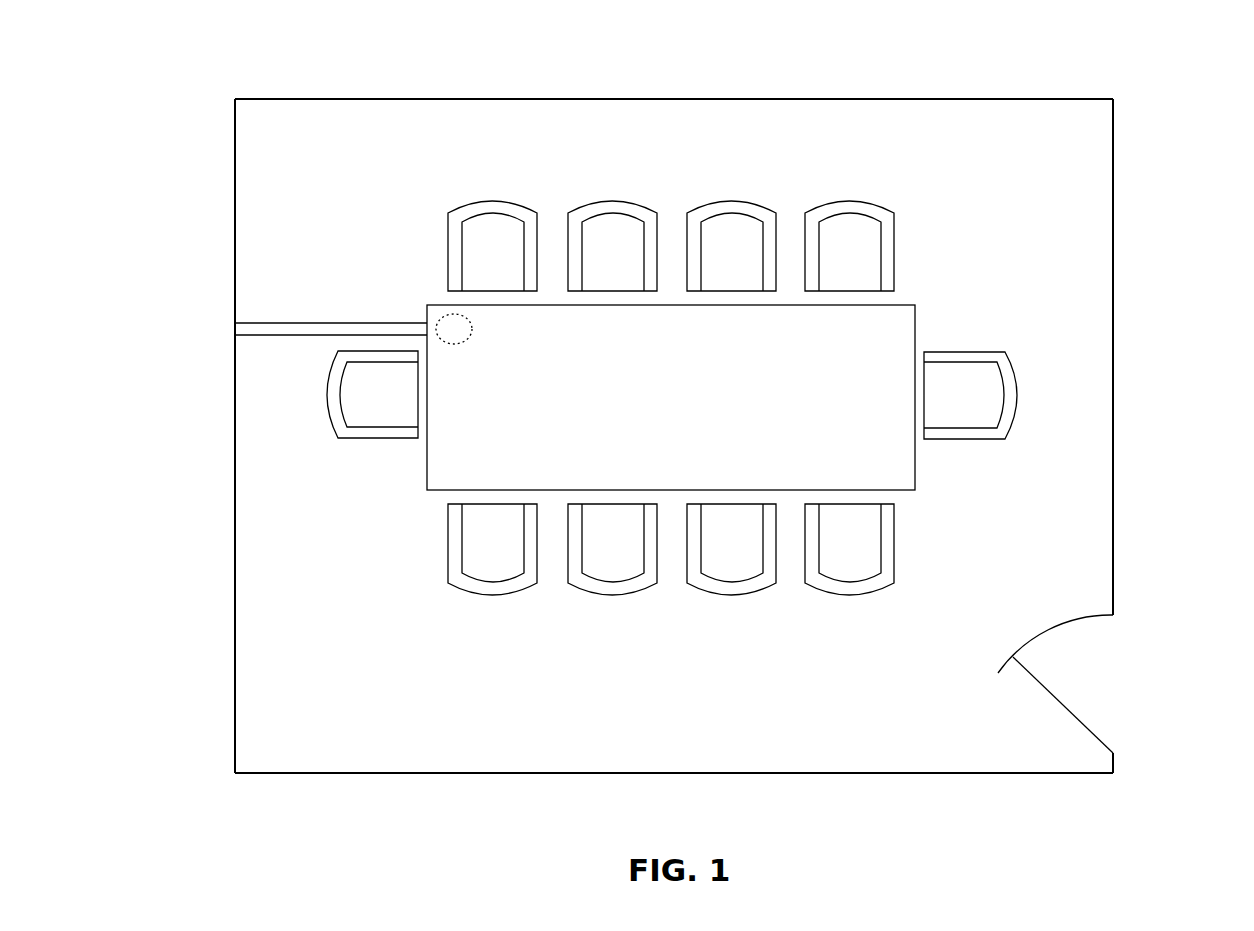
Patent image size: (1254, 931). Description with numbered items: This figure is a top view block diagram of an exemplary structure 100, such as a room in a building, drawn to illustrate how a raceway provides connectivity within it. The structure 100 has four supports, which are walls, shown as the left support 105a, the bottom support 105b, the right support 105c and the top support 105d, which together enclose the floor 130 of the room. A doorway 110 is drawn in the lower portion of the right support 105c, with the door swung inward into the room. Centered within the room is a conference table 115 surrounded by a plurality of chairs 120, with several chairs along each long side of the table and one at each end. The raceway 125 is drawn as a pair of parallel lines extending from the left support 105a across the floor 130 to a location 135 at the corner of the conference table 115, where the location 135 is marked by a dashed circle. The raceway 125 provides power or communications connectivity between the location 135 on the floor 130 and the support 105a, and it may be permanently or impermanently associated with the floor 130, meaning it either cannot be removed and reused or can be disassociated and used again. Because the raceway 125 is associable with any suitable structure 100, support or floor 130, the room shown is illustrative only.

The structure 100 is at (687, 437).
The support 105a is at (235, 433).
The support 105b is at (672, 773).
The support 105c is at (1113, 432).
The support 105d is at (673, 99).
The doorway 110 is at (1099, 683).
The conference table 115 is at (915, 465).
The chairs 120 is at (850, 201).
The raceway 125 is at (330, 322).
The floor 130 is at (377, 668).
The location 135 is at (457, 353).